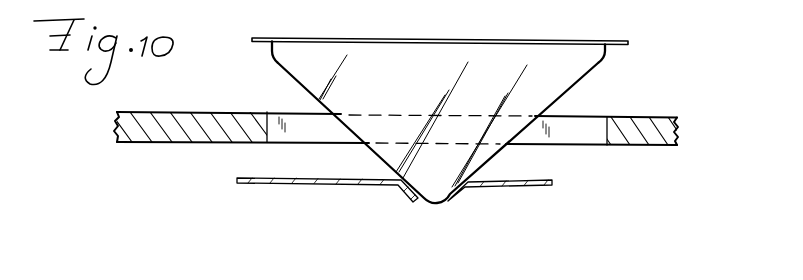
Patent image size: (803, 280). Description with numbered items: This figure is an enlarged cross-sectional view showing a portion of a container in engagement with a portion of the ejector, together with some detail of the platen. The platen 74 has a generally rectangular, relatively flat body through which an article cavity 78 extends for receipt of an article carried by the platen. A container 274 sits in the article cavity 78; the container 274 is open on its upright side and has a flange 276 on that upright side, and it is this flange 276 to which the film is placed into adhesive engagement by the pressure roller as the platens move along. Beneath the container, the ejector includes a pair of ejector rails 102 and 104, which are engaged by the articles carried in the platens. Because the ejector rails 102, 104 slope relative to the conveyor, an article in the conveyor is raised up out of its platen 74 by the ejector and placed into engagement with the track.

The flange 276 is at (259, 37).
The container 274 is at (428, 47).
The platen 74 is at (238, 112).
The article cavity 78 is at (606, 133).
The ejector rail 104 is at (362, 187).
The ejector rail 102 is at (498, 188).